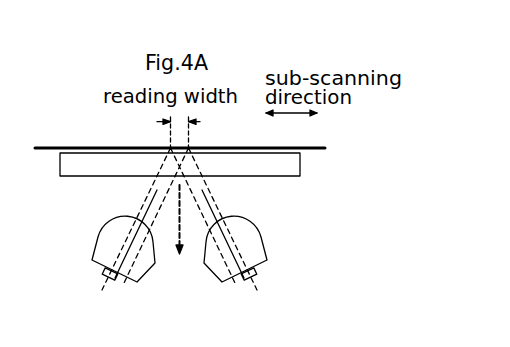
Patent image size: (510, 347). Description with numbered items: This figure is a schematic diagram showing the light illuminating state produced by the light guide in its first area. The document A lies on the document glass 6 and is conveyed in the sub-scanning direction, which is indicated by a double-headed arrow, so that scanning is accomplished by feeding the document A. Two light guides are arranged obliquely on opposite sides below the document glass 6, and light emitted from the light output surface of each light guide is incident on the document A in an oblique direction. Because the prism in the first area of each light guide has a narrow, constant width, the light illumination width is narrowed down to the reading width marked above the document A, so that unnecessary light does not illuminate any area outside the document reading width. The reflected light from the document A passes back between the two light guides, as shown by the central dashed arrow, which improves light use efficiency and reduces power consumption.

The document A is at (52, 146).
The document glass 6 is at (277, 177).